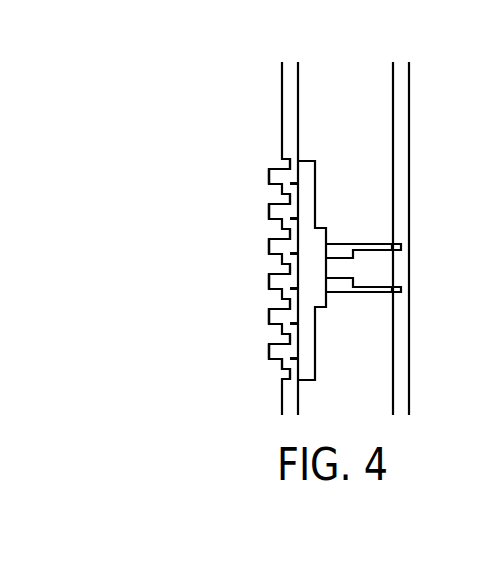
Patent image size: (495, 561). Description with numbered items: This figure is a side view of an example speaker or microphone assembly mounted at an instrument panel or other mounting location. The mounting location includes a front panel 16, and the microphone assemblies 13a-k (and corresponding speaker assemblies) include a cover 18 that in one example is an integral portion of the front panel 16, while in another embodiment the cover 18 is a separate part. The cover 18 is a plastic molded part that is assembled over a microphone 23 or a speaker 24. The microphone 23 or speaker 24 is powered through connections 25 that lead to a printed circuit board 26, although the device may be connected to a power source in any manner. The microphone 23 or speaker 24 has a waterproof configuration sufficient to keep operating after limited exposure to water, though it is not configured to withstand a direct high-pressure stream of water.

The front panel 16 is at (271, 83).
The cover 18 is at (238, 159).
The microphone 23 is at (307, 173).
The speaker 24 is at (279, 321).
The connections 25 is at (350, 244).
The printed circuit board 26 is at (405, 175).
The microphone assemblies 13a-k is at (258, 384).